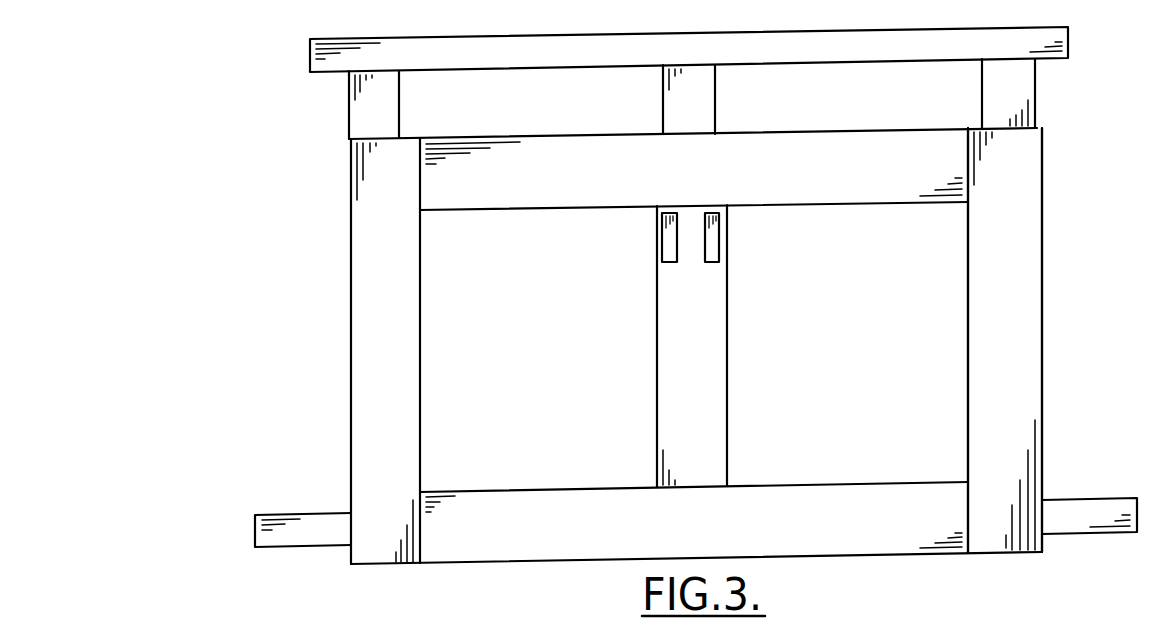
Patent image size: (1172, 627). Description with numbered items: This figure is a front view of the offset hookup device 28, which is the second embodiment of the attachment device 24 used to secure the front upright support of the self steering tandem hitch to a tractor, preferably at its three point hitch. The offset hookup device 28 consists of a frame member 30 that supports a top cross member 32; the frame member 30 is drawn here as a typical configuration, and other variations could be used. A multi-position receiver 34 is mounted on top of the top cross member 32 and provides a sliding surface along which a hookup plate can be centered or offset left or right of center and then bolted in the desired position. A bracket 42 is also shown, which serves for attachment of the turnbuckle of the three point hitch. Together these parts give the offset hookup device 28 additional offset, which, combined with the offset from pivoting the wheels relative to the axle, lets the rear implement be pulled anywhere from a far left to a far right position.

The attachment device 24 is at (260, 571).
The offset hookup device 28 is at (1037, 430).
The frame member 30 is at (853, 555).
The top cross member 32 is at (520, 211).
The multi-position receiver 34 is at (813, 31).
The bracket 42 is at (657, 232).